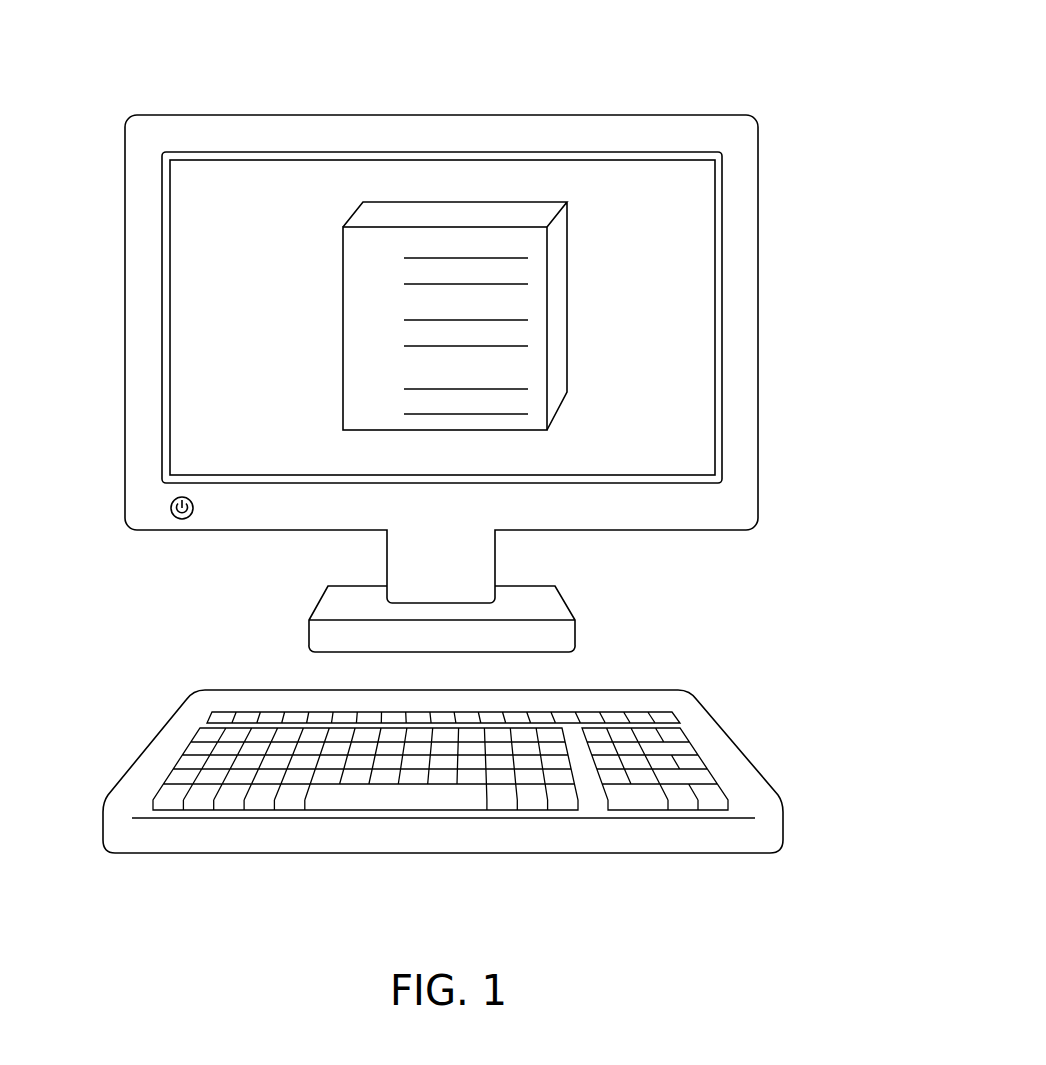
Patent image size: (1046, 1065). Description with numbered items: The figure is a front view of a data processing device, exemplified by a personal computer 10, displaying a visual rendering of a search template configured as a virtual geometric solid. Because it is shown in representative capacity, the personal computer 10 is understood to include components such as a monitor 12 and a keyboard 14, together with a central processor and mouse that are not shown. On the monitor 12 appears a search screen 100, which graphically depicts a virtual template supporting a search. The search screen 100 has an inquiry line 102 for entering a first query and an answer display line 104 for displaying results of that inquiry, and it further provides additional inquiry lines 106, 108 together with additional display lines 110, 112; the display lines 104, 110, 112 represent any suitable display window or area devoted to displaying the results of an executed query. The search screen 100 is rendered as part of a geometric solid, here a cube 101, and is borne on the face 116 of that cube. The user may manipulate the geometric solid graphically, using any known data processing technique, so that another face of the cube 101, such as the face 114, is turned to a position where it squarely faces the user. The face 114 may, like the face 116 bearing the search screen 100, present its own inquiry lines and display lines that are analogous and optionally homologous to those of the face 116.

The personal computer 10 is at (624, 72).
The monitor 12 is at (172, 115).
The keyboard 14 is at (443, 771).
The search screen 100 is at (274, 140).
The cube 101 is at (451, 188).
The inquiry line 102 is at (503, 258).
The answer display line 104 is at (503, 284).
The additional inquiry line 106 is at (503, 320).
The additional inquiry line 108 is at (503, 389).
The additional display line 110 is at (503, 346).
The additional display line 112 is at (503, 414).
The face 114 is at (558, 231).
The face 116 is at (343, 236).